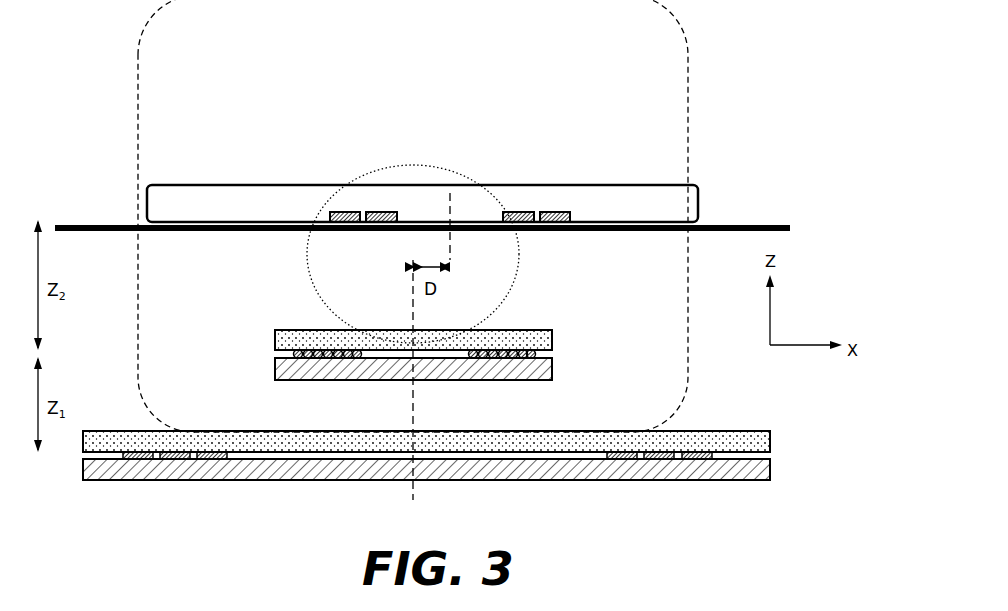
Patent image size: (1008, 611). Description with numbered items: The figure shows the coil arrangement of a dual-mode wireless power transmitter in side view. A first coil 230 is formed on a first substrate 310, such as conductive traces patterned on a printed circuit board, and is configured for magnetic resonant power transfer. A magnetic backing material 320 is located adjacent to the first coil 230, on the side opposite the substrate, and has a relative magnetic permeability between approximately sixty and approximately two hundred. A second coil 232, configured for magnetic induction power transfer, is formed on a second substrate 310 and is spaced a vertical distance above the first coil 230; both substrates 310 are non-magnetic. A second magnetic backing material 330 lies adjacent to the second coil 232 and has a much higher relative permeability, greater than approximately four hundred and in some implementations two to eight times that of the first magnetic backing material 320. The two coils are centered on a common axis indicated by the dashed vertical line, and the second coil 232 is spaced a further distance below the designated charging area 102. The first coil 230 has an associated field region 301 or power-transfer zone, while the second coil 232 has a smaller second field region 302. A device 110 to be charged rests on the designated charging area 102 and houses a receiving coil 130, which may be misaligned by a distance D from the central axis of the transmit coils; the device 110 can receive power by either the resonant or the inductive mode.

The designated charging area 102 is at (755, 225).
The device 110 is at (271, 185).
The receiving coil 130 is at (380, 210).
The first coil 230 is at (137, 452).
The second coil 232 is at (517, 352).
The field region 301 is at (182, 303).
The second field region 302 is at (353, 287).
The substrate 310 is at (553, 340).
The magnetic backing material 320 is at (771, 471).
The second magnetic backing material 330 is at (553, 368).